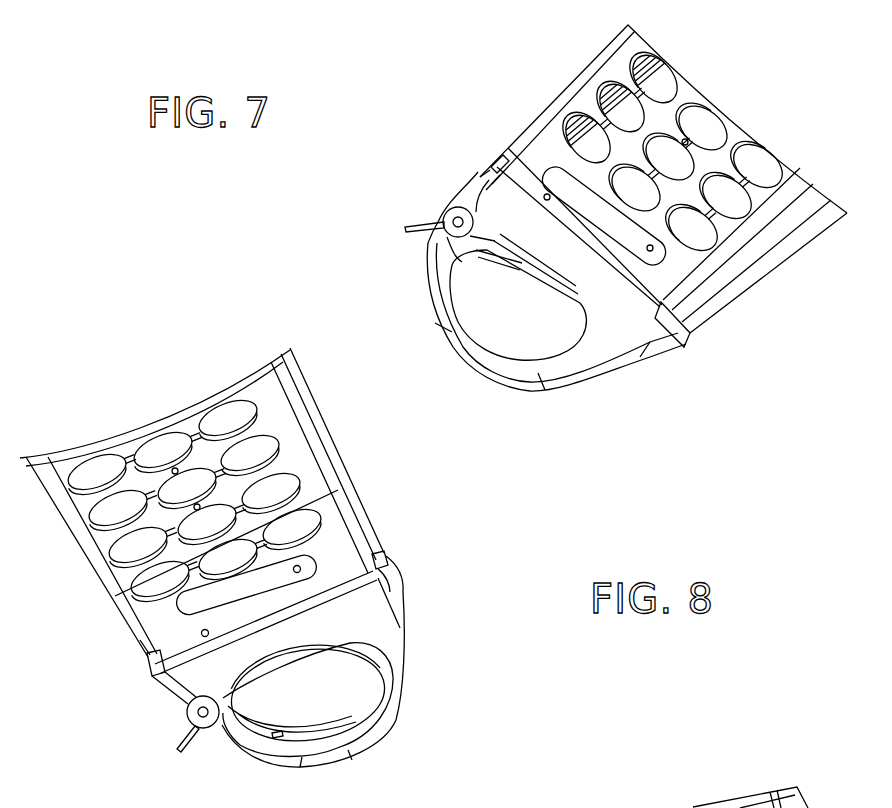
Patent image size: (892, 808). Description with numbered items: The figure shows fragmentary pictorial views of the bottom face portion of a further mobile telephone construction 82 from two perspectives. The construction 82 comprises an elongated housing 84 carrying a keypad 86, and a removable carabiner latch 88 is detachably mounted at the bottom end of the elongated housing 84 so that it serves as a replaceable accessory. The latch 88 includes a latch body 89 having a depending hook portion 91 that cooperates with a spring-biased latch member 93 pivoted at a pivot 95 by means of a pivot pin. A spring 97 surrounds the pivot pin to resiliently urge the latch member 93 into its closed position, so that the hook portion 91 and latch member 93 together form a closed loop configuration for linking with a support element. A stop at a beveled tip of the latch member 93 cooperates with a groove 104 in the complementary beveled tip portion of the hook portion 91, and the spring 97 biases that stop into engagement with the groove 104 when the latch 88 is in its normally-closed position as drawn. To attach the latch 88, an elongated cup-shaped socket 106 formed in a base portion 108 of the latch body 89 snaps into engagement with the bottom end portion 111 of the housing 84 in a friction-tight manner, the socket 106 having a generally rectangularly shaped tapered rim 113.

In FIG. 7, the mobile telephone construction 82 is at (305, 190).
In FIG. 8, the mobile telephone construction 82 is at (474, 660).
In FIG. 7, the elongated housing 84 is at (718, 313).
In FIG. 8, the elongated housing 84 is at (366, 527).
In FIG. 7, the keypad 86 is at (766, 200).
In FIG. 8, the keypad 86 is at (150, 613).
In FIG. 7, the removable carabiner latch 88 is at (600, 381).
In FIG. 8, the removable carabiner latch 88 is at (348, 755).
In FIG. 7, the latch body 89 is at (477, 170).
In FIG. 8, the latch body 89 is at (407, 604).
In FIG. 7, the hook portion 91 is at (455, 357).
In FIG. 8, the hook portion 91 is at (396, 706).
In FIG. 7, the latch member 93 is at (428, 286).
In FIG. 8, the latch member 93 is at (281, 760).
In FIG. 7, the pivot 95 is at (452, 214).
In FIG. 8, the pivot 95 is at (198, 713).
In FIG. 7, the spring 97 is at (406, 230).
In FIG. 8, the spring 97 is at (178, 745).
In FIG. 8, the groove 104 is at (328, 728).
In FIG. 7, the elongated cup-shaped socket 106 is at (494, 165).
In FIG. 8, the elongated cup-shaped socket 106 is at (381, 556).
In FIG. 7, the base portion 108 is at (477, 192).
In FIG. 8, the base portion 108 is at (400, 575).
In FIG. 7, the bottom end portion 111 is at (507, 150).
In FIG. 8, the bottom end portion 111 is at (147, 658).
In FIG. 7, the tapered rim 113 is at (677, 340).
In FIG. 8, the tapered rim 113 is at (153, 668).